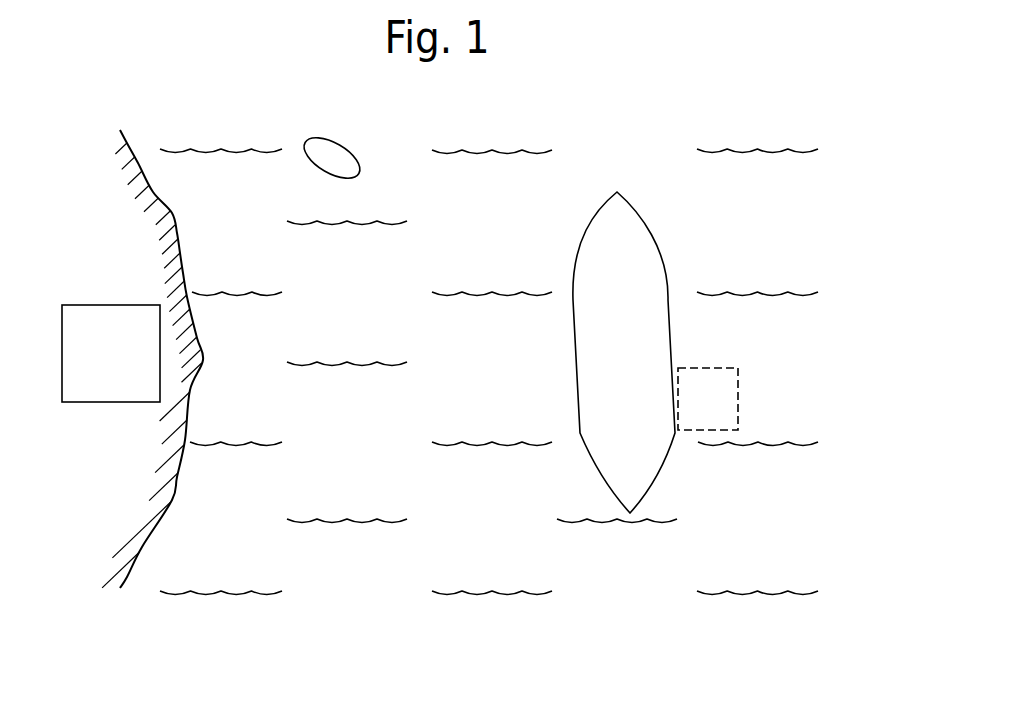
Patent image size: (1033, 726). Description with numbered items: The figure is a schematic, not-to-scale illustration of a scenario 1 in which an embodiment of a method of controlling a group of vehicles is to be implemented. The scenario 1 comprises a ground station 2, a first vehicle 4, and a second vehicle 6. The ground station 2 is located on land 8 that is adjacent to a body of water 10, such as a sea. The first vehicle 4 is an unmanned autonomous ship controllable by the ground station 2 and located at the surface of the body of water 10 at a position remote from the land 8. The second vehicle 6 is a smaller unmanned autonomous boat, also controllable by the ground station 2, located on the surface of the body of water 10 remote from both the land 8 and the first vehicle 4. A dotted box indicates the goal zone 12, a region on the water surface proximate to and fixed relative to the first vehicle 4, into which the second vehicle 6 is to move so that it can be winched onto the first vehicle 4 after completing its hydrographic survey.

The scenario 1 is at (630, 132).
The ground station 2 is at (106, 365).
The first vehicle 4 is at (618, 361).
The second vehicle 6 is at (338, 152).
The land 8 is at (132, 147).
The body of water 10 is at (433, 363).
The goal zone 12 is at (694, 411).